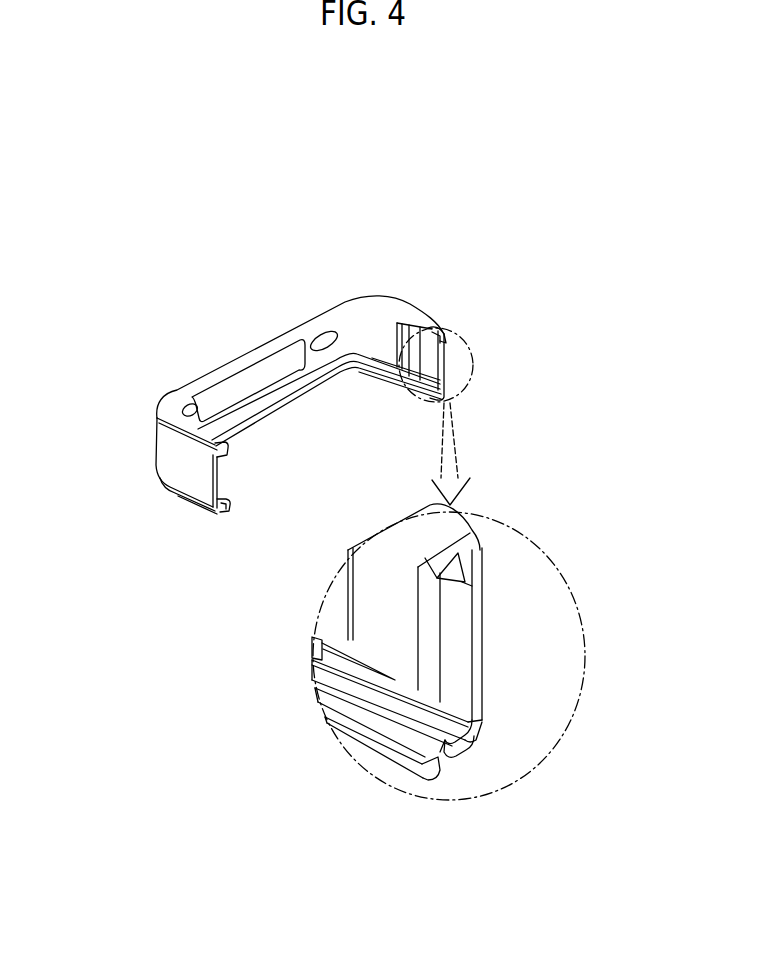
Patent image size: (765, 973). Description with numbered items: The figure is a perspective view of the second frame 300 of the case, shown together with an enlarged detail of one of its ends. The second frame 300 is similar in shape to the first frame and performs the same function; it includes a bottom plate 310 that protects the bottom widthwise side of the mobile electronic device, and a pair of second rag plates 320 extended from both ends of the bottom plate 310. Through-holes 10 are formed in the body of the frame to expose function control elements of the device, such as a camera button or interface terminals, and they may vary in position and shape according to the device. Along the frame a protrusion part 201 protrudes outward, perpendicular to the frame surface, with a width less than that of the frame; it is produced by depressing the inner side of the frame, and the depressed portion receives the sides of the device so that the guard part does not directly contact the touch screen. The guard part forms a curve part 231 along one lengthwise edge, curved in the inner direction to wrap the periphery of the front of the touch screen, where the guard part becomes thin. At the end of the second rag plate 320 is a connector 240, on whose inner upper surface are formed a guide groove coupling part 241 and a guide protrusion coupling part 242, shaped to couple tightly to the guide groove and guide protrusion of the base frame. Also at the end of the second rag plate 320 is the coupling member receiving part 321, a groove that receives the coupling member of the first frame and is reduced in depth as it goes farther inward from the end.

The through-hole 10 is at (260, 373).
The second frame 300 is at (210, 338).
The bottom plate 310 is at (338, 328).
The curve part 231 is at (412, 323).
The protrusion part 201 is at (190, 470).
The second rag plate 320 is at (187, 518).
The connector 240 is at (227, 502).
The coupling member receiving part 321 is at (432, 632).
The guide groove coupling part 241 is at (407, 747).
The guide protrusion coupling part 242 is at (460, 752).